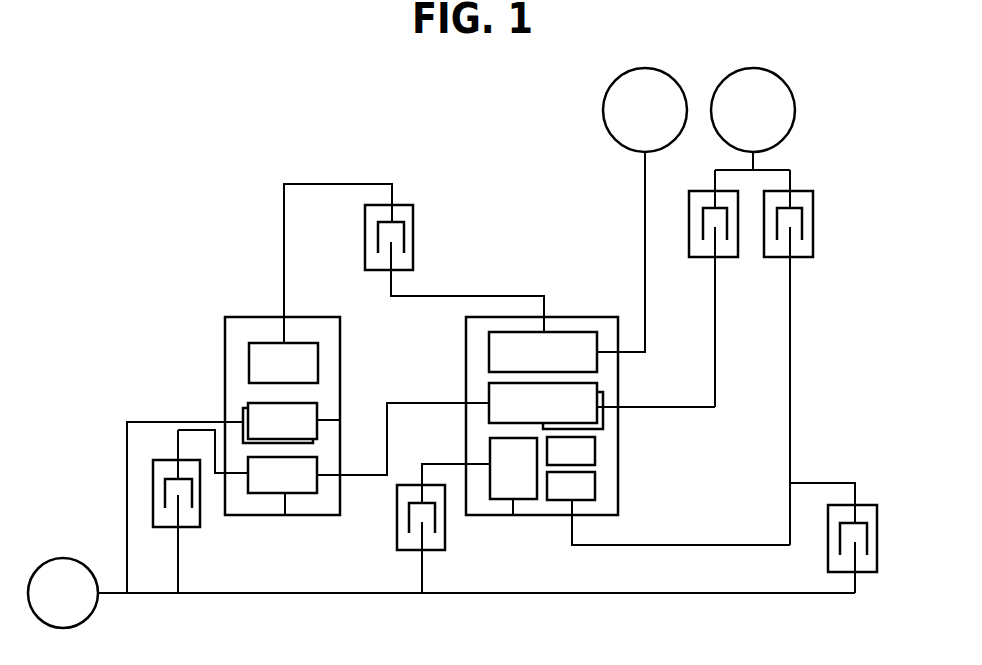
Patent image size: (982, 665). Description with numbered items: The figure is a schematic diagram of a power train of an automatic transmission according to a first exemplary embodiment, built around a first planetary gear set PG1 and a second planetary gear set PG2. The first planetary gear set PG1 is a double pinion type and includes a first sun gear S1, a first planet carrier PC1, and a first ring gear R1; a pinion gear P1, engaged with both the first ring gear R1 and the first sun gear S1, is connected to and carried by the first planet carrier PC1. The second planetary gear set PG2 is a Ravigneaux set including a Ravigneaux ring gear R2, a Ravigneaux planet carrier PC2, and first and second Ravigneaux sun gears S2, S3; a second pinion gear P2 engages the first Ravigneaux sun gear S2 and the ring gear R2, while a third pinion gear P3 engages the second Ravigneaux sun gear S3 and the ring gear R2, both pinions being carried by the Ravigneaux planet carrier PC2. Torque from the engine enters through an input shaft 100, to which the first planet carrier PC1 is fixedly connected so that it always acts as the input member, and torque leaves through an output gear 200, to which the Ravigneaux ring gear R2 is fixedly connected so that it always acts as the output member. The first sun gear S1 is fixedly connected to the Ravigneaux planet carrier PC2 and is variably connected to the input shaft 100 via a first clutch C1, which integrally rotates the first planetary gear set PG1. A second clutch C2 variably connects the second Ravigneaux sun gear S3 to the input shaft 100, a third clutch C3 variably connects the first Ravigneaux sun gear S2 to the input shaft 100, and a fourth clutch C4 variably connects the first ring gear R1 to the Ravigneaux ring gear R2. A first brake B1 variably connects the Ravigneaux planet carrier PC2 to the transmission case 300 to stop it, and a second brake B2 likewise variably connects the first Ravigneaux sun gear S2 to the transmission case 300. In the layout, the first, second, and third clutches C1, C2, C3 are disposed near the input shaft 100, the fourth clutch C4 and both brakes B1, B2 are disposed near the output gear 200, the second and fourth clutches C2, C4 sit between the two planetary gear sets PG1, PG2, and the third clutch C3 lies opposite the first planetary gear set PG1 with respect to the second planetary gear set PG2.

The input shaft 100 is at (240, 593).
The output gear 200 is at (645, 196).
The transmission case 300 is at (795, 112).
The first planetary gear set PG1 is at (222, 308).
The second planetary gear set PG2 is at (557, 308).
The first planet carrier PC1 is at (185, 405).
The Ravigneaux planet carrier PC2 is at (656, 392).
The first ring gear R1 is at (320, 283).
The Ravigneaux ring gear R2 is at (543, 352).
The pinion gear P1 is at (291, 423).
The second pinion gear P2 is at (571, 451).
The third pinion gear P3 is at (546, 406).
The first sun gear S1 is at (368, 459).
The first Ravigneaux sun gear S2 is at (668, 508).
The second Ravigneaux sun gear S3 is at (479, 476).
The first clutch C1 is at (200, 511).
The second clutch C2 is at (426, 539).
The third clutch C3 is at (857, 554).
The fourth clutch C4 is at (449, 268).
The first brake B1 is at (718, 299).
The second brake B2 is at (809, 368).